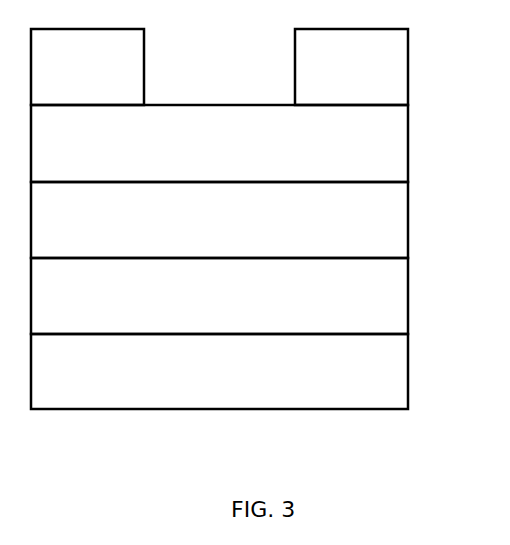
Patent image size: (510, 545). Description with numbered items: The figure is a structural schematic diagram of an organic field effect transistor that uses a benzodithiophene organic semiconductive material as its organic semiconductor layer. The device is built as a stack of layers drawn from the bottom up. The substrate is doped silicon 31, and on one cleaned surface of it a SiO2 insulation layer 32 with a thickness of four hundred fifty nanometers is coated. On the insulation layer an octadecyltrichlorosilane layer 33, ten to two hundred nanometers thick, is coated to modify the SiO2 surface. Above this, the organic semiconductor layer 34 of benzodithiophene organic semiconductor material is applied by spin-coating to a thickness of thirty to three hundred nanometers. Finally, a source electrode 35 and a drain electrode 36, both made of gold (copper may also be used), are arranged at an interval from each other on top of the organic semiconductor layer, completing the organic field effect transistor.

The doped silicon substrate 31 is at (408, 368).
The SiO2 insulation layer 32 is at (408, 290).
The octadecyltrichlorosilane layer 33 is at (408, 220).
The organic semiconductor layer 34 is at (408, 140).
The source electrode 35 is at (144, 68).
The drain electrode 36 is at (408, 60).